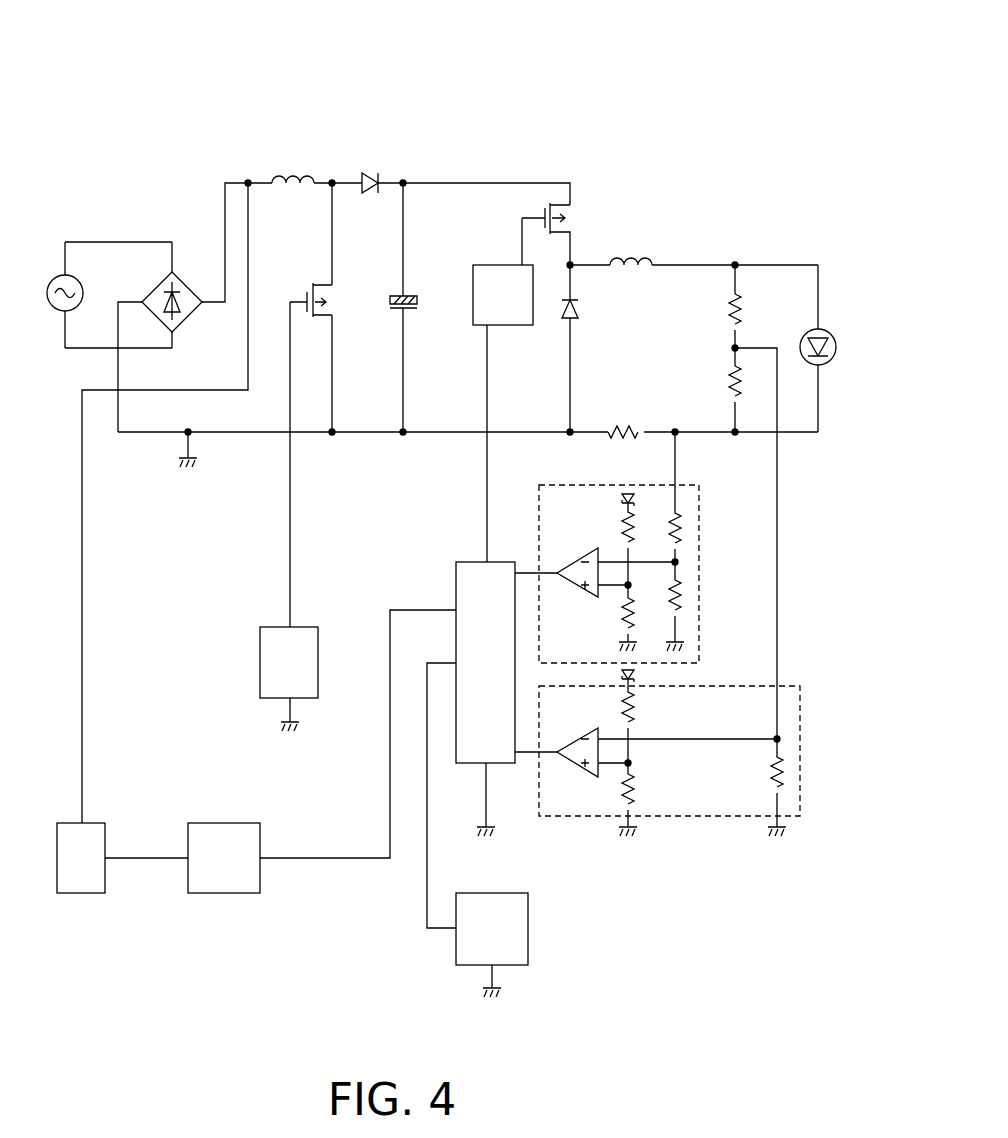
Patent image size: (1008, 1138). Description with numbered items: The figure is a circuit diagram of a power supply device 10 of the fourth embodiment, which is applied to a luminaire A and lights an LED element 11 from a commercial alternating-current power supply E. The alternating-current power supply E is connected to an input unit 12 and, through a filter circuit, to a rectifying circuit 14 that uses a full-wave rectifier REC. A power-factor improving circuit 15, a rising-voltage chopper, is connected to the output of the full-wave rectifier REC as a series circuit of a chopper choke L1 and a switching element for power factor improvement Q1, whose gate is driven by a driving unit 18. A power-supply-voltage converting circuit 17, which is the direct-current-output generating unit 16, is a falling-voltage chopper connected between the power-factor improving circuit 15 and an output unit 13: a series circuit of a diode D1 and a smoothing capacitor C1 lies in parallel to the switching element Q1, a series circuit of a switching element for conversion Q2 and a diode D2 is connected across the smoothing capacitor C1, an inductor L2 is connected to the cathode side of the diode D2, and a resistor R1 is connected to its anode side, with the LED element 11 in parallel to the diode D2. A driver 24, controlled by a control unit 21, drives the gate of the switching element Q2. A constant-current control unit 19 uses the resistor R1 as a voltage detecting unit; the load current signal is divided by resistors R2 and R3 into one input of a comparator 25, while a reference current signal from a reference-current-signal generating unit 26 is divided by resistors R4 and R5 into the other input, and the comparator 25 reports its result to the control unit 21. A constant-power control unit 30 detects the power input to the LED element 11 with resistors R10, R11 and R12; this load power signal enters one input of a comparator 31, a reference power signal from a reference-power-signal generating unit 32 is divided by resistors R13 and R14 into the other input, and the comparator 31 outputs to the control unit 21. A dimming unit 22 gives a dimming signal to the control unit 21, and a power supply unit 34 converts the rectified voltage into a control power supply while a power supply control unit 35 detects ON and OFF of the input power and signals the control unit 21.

The power supply device 10 is at (439, 115).
The LED element 11 is at (836, 340).
The input unit 12 is at (65, 242).
The output unit 13 is at (818, 268).
The rectifying circuit 14 is at (142, 255).
The power-factor improving circuit 15 is at (318, 195).
The direct-current-output generating unit 16 is at (474, 195).
The power-supply-voltage converting circuit 17 is at (514, 195).
The driving unit 18 is at (260, 645).
The constant-current control unit 19 is at (700, 486).
The control unit 21 is at (456, 585).
The dimming unit 22 is at (528, 928).
The driver 24 is at (473, 280).
The comparator 25 is at (590, 553).
The reference-current-signal generating unit 26 is at (628, 490).
The constant-power control unit 30 is at (683, 818).
The comparator 31 is at (576, 767).
The reference-power-signal generating unit 32 is at (622, 680).
The power supply unit 34 is at (98, 823).
The power supply control unit 35 is at (223, 823).
The luminaire A is at (735, 52).
The alternating-current power supply E is at (55, 282).
The full-wave rectifier REC is at (182, 315).
The chopper choke L1 is at (280, 175).
The inductor L2 is at (648, 258).
The diode D1 is at (365, 176).
The diode D2 is at (590, 310).
The switching element for power factor improvement Q1 is at (308, 291).
The switching element for conversion Q2 is at (577, 217).
The smoothing capacitor C1 is at (398, 297).
The resistor R1 is at (622, 418).
The resistor R2 is at (685, 528).
The resistor R3 is at (685, 592).
The resistor R4 is at (622, 520).
The resistor R5 is at (622, 608).
The resistor R10 is at (742, 312).
The resistor R11 is at (730, 390).
The resistor R12 is at (795, 773).
The resistor R13 is at (638, 710).
The resistor R14 is at (638, 792).